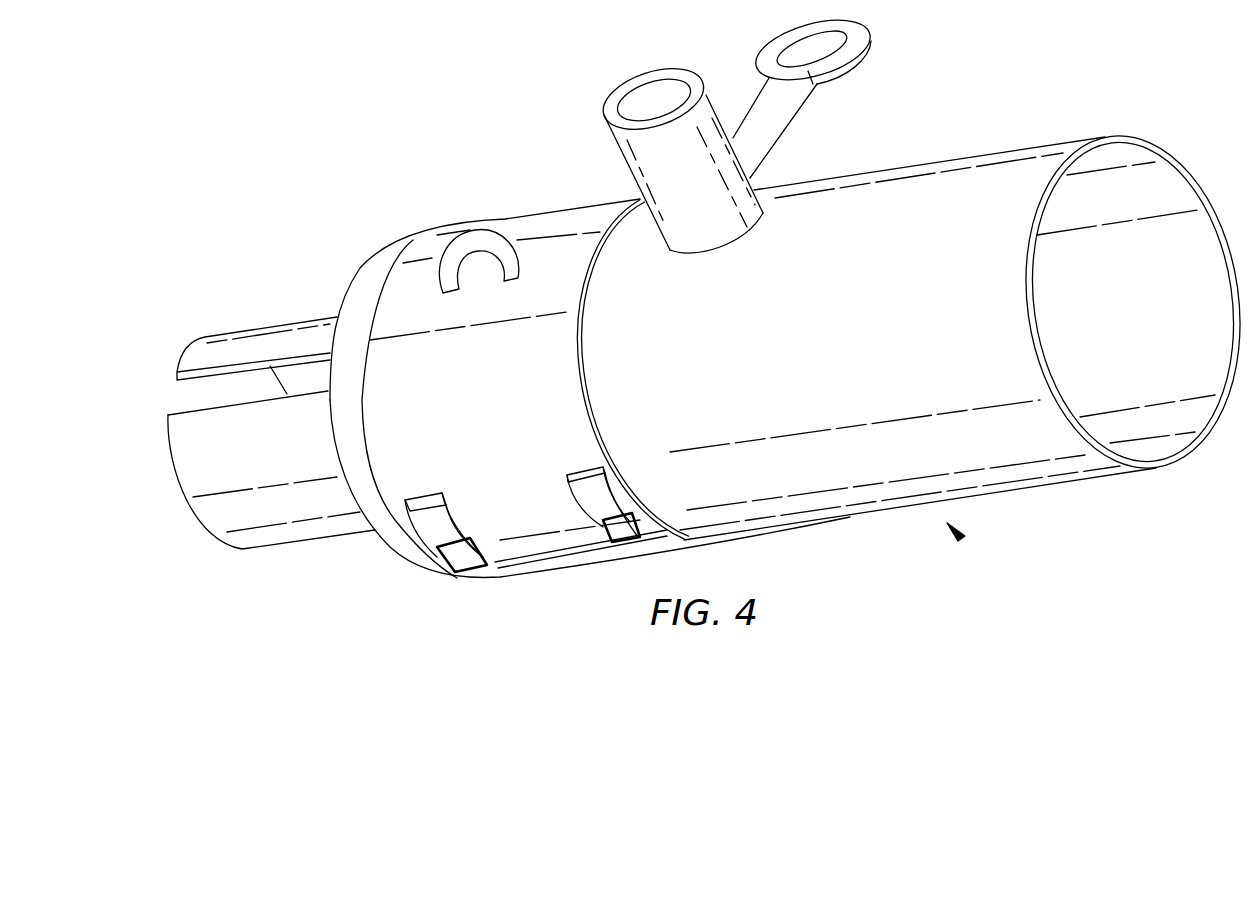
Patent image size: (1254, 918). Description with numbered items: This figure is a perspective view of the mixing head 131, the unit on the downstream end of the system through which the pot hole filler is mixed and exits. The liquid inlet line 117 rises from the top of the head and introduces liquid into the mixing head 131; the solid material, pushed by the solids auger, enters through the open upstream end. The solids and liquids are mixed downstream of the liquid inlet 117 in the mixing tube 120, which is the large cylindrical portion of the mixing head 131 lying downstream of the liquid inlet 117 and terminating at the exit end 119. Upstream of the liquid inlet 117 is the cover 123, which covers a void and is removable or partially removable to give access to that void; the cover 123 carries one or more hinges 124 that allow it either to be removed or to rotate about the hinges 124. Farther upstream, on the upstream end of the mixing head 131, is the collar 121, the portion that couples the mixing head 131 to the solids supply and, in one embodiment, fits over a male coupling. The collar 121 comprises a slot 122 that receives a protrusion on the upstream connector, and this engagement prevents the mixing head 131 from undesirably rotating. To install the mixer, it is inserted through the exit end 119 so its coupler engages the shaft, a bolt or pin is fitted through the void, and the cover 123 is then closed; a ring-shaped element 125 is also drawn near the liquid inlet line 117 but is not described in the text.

The liquid inlet line 117 is at (615, 137).
The exit end 119 is at (1173, 143).
The mixing tube 120 is at (858, 357).
The collar 121 is at (271, 456).
The slot 122 is at (185, 401).
The cover 123 is at (500, 401).
The hinges 124 is at (434, 539).
The eyelet 125 is at (847, 58).
The mixing head 131 is at (961, 538).